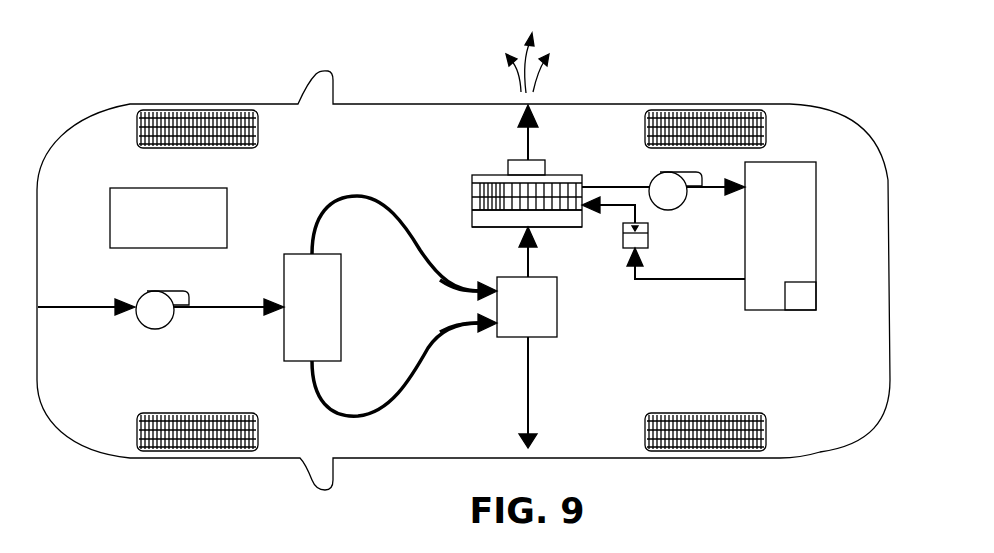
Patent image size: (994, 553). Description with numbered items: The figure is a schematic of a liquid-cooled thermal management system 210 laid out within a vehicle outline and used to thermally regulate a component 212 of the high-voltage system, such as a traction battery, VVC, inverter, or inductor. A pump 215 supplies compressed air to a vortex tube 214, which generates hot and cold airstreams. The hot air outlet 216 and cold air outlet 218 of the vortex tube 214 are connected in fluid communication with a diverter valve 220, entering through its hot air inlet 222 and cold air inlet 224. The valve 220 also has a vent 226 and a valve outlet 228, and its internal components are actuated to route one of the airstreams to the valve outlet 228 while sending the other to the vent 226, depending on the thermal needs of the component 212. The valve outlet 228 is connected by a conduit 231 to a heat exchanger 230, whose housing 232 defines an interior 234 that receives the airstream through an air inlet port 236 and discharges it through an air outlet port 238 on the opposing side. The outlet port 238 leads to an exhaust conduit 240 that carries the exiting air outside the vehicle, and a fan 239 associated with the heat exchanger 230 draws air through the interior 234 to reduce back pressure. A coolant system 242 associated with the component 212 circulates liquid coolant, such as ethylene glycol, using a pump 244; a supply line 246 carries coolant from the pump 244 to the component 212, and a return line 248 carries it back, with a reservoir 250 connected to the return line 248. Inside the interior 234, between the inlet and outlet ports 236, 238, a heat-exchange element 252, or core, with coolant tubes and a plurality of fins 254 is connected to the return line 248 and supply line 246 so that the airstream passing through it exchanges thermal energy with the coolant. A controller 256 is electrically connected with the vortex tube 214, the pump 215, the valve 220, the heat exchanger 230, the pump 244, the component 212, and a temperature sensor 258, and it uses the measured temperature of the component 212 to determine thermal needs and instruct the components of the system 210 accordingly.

The thermal management system 210 is at (308, 182).
The component 212 is at (817, 230).
The vortex tube 214 is at (342, 306).
The pump 215 is at (153, 330).
The hot air outlet 216 is at (310, 250).
The cold air outlet 218 is at (306, 367).
The diverter valve 220 is at (557, 305).
The hot air inlet 222 is at (493, 283).
The cold air inlet 224 is at (493, 333).
The vent 226 is at (533, 340).
The valve outlet 228 is at (534, 268).
The heat exchanger 230 is at (588, 186).
The conduit 231 is at (510, 240).
The housing 232 is at (557, 177).
The interior 234 is at (496, 212).
The air inlet port 236 is at (542, 233).
The air outlet port 238 is at (532, 160).
The fan 239 is at (518, 160).
The exhaust conduit 240 is at (522, 140).
The coolant system 242 is at (728, 310).
The pump 244 is at (666, 211).
The supply line 246 is at (714, 186).
The return line 248 is at (652, 281).
The reservoir 250 is at (648, 234).
The heat-exchange element 252 is at (567, 193).
The fins 254 is at (502, 188).
The controller 256 is at (200, 188).
The temperature sensor 258 is at (800, 312).